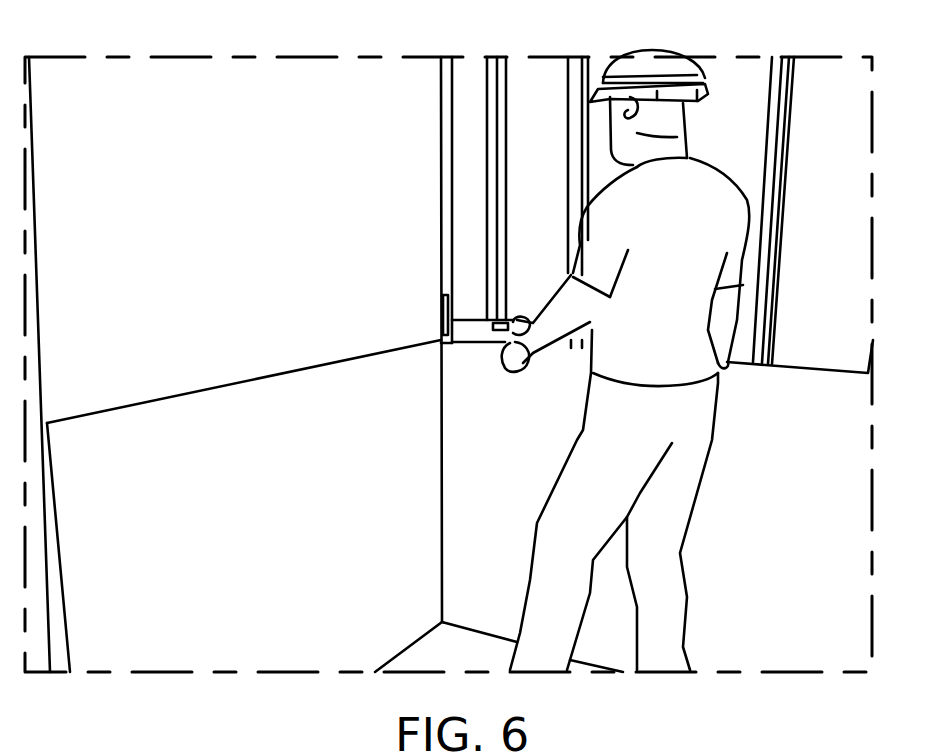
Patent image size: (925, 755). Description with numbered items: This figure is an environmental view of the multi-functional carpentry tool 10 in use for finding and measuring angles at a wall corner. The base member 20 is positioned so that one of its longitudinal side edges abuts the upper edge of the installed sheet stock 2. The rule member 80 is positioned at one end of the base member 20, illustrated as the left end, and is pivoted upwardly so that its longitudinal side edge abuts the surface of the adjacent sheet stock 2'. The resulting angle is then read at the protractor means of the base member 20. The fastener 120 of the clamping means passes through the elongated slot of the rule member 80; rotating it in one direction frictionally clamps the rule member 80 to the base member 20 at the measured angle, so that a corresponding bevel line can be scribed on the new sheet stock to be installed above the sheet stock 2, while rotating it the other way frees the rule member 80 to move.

The sheet stock 2 is at (624, 506).
The adjacent sheet stock 2' is at (235, 364).
The multi-functional carpentry tool 10 is at (549, 68).
The base member 20 is at (478, 356).
The rule member 80 is at (462, 71).
The fastener 120 is at (441, 326).